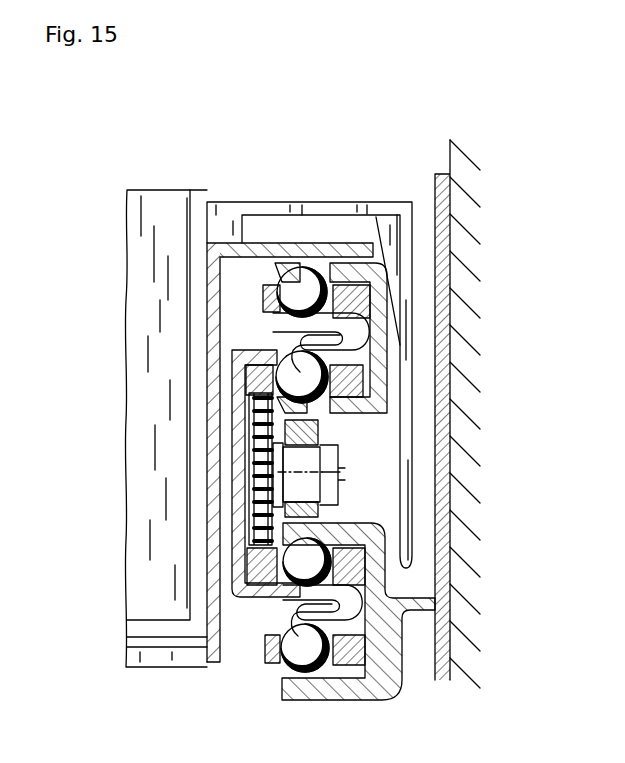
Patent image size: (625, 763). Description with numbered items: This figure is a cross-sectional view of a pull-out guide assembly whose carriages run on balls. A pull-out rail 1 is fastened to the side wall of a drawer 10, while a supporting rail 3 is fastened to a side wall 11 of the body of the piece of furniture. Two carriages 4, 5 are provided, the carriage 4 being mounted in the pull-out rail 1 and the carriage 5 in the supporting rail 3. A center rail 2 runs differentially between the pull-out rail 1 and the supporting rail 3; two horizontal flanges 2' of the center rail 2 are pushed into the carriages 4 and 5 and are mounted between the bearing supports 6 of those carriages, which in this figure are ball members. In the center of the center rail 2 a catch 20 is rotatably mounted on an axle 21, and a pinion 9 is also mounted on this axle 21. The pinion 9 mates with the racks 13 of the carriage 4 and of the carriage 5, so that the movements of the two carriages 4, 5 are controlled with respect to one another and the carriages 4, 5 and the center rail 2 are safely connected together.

The pull-out rail 1 is at (380, 323).
The center rail 2 is at (165, 473).
The horizontal flanges 2' is at (213, 471).
The supporting rail 3 is at (380, 578).
The carriage 4 is at (360, 372).
The carriage 5 is at (360, 650).
The bearing supports 6 is at (294, 282).
The pinion 9 is at (258, 487).
The drawer 10 is at (147, 262).
The side wall 11 is at (455, 290).
The racks 13 is at (262, 400).
The catch 20 is at (303, 440).
The axle 21 is at (307, 458).